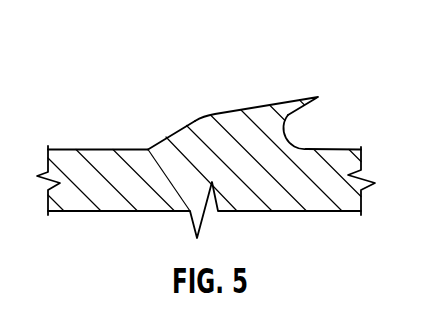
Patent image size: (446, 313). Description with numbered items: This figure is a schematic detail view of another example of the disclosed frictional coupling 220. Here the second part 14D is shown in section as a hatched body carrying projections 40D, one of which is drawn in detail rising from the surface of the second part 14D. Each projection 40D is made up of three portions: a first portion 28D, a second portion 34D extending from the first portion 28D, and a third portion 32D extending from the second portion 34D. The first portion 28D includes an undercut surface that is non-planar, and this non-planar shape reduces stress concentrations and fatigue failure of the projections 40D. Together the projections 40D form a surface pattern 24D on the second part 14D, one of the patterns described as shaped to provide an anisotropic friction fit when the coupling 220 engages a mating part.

The frictional coupling 220 is at (113, 53).
The second part 14D is at (328, 203).
The projections 40D is at (76, 140).
The third portion 32D is at (177, 131).
The second portion 34D is at (283, 103).
The surface pattern 24D is at (312, 80).
The first portion 28D is at (288, 118).